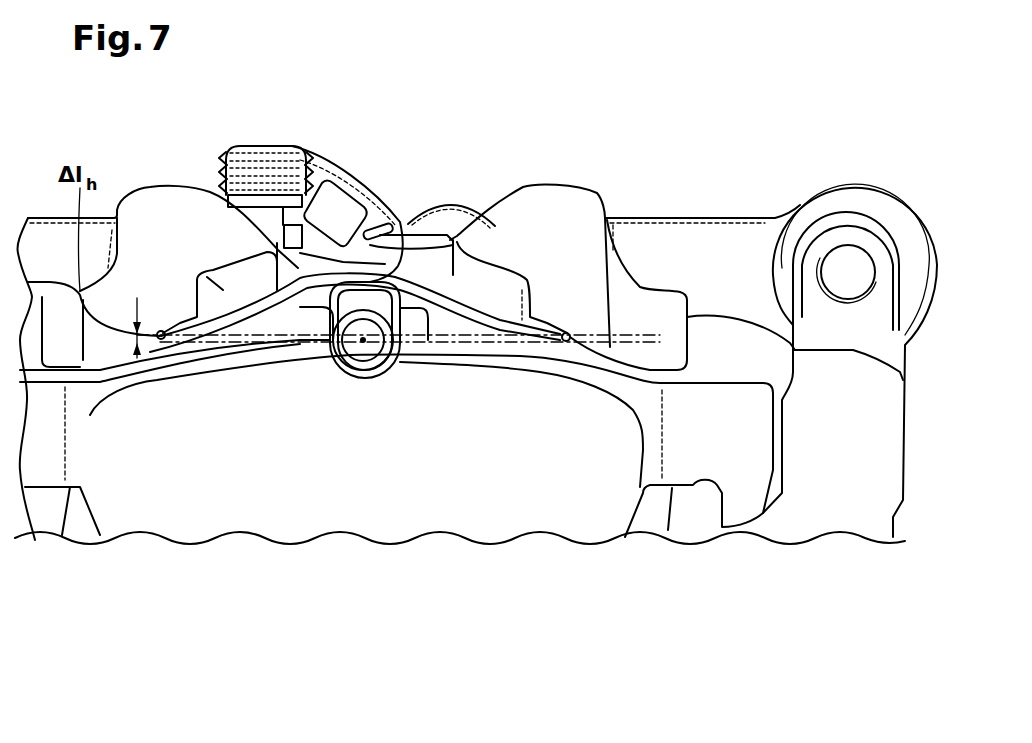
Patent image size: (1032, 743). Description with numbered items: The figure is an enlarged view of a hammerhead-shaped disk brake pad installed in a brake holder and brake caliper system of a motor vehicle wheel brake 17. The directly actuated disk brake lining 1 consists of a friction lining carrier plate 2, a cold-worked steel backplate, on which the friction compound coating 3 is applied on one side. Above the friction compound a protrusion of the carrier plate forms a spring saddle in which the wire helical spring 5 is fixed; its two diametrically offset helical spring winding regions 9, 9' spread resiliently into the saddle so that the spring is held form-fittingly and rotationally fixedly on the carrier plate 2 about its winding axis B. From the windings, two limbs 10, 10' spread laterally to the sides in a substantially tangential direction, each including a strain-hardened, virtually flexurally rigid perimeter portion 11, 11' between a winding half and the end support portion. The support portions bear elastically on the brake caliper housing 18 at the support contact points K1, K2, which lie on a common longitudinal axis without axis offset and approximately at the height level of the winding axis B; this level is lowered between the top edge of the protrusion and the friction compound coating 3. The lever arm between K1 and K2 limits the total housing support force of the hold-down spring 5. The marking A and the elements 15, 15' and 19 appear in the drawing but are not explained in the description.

The disk brake lining 1 is at (335, 546).
The friction lining carrier plate 2 is at (123, 383).
The friction compound coating 3 is at (193, 498).
The wire helical spring 5 is at (505, 346).
The helical spring winding region 9 is at (355, 435).
The helical spring winding region 9' is at (379, 440).
The limb 10 is at (397, 217).
The limb 10' is at (340, 188).
The perimeter portion 11 is at (625, 221).
The perimeter portion 11' is at (265, 208).
The carrier horn 15 is at (674, 520).
The carrier horn 15' is at (60, 519).
The motor vehicle wheel brake 17 is at (775, 192).
The brake caliper housing 18 is at (163, 220).
The guide groove 19 is at (744, 490).
The winding axis B is at (363, 346).
The support contact point K1 is at (162, 341).
The support contact point K2 is at (566, 342).
The contact surface A, M A is at (603, 350).